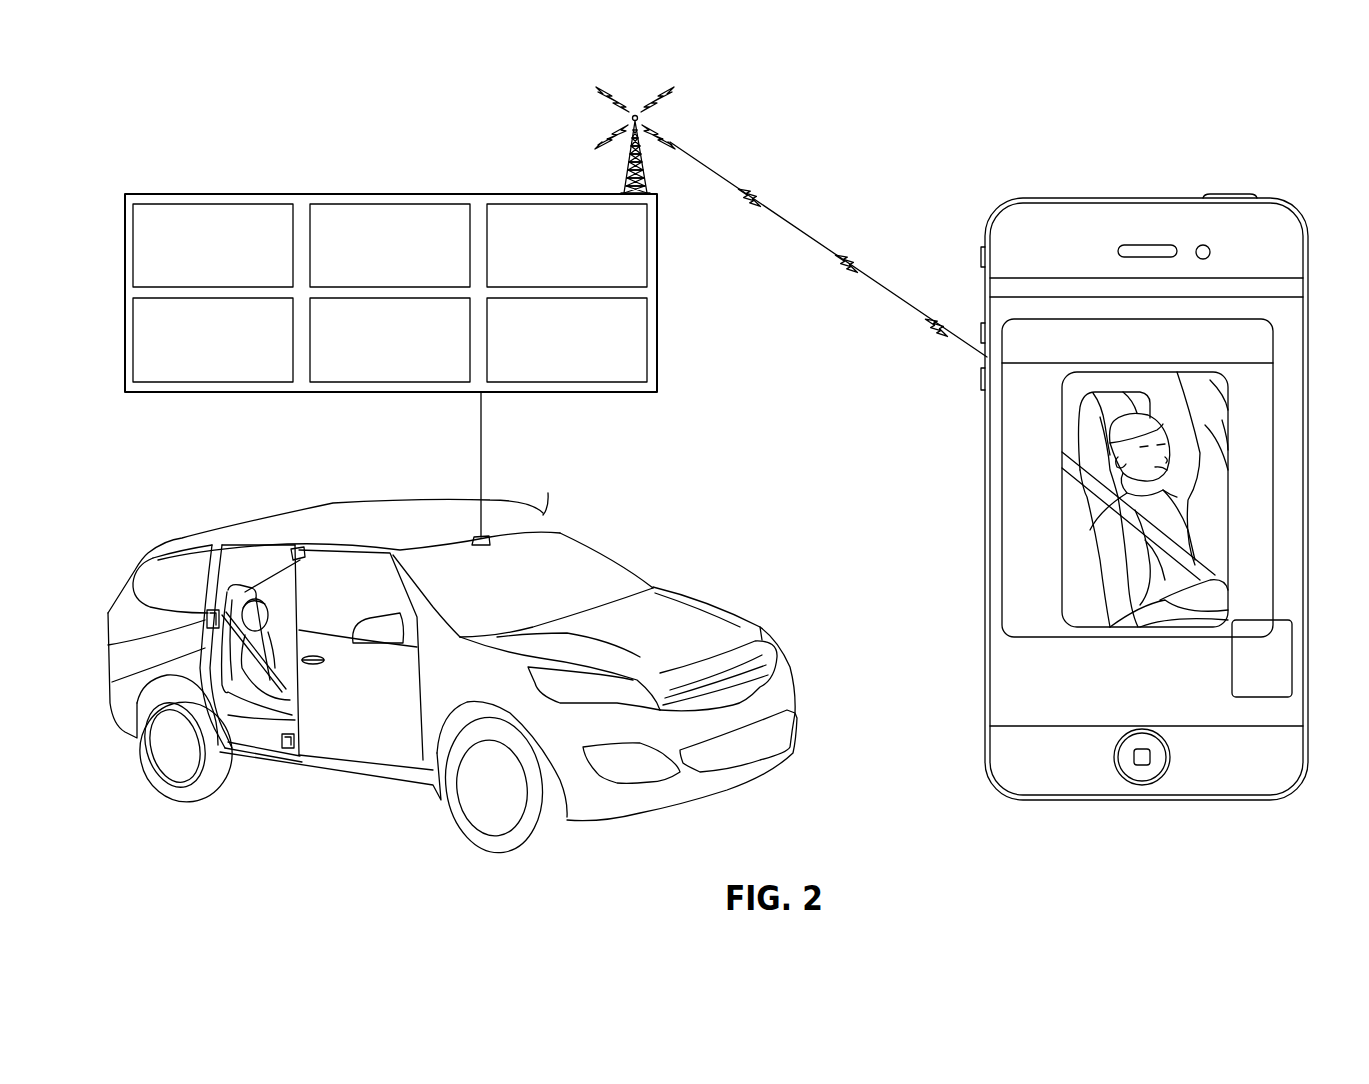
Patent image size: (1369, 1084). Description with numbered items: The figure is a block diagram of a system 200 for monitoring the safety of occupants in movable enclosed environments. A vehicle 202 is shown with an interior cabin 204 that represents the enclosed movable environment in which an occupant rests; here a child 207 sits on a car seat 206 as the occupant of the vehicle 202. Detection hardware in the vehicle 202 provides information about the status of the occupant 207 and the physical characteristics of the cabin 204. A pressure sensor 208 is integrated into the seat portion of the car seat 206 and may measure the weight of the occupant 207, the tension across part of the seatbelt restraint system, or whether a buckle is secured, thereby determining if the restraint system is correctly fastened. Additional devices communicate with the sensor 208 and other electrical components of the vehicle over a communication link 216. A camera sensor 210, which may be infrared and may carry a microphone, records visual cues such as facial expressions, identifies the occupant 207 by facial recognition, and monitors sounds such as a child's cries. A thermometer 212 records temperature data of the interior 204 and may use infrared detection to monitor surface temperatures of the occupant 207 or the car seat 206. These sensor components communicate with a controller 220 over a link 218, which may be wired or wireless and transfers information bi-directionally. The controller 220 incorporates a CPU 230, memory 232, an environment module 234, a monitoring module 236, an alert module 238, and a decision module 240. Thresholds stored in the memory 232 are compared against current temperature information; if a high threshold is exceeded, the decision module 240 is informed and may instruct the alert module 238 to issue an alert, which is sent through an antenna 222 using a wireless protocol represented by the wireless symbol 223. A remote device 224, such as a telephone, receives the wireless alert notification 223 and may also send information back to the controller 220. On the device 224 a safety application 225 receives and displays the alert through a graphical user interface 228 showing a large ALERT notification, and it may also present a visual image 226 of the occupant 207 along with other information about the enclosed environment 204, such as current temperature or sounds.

The system 200 is at (148, 162).
The vehicle 202 is at (567, 533).
The interior cabin 204 is at (250, 579).
The car seat 206 is at (215, 648).
The child 207 is at (223, 647).
The sensor 208 is at (207, 617).
The camera sensor 210 is at (294, 552).
The thermometer 212 is at (286, 750).
The communication link 216 is at (253, 582).
The link 218 is at (481, 440).
The controller 220 is at (657, 307).
The antenna 222 is at (628, 170).
The wireless symbol 223 is at (797, 229).
The device 224 is at (988, 232).
The safety application 225 is at (1277, 698).
The visual image 226 is at (1062, 495).
The graphical user interface 228 is at (1010, 330).
The CPU 230 is at (196, 266).
The memory 232 is at (373, 266).
The environment module 234 is at (550, 281).
The monitoring module 236 is at (196, 376).
The alert module 238 is at (373, 376).
The decision module 240 is at (550, 376).